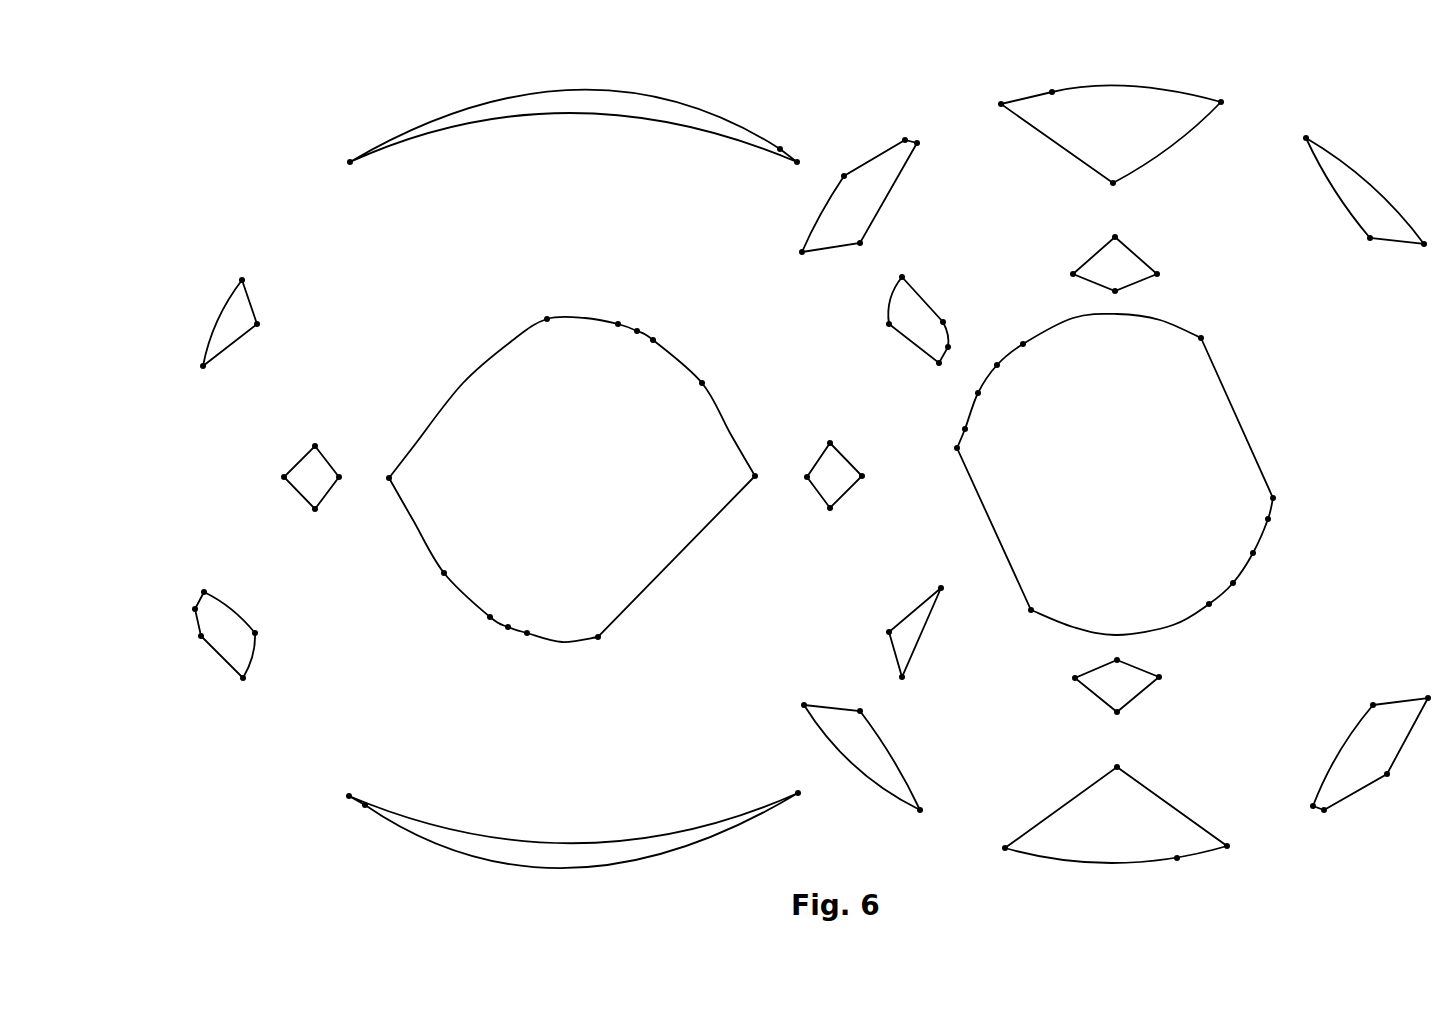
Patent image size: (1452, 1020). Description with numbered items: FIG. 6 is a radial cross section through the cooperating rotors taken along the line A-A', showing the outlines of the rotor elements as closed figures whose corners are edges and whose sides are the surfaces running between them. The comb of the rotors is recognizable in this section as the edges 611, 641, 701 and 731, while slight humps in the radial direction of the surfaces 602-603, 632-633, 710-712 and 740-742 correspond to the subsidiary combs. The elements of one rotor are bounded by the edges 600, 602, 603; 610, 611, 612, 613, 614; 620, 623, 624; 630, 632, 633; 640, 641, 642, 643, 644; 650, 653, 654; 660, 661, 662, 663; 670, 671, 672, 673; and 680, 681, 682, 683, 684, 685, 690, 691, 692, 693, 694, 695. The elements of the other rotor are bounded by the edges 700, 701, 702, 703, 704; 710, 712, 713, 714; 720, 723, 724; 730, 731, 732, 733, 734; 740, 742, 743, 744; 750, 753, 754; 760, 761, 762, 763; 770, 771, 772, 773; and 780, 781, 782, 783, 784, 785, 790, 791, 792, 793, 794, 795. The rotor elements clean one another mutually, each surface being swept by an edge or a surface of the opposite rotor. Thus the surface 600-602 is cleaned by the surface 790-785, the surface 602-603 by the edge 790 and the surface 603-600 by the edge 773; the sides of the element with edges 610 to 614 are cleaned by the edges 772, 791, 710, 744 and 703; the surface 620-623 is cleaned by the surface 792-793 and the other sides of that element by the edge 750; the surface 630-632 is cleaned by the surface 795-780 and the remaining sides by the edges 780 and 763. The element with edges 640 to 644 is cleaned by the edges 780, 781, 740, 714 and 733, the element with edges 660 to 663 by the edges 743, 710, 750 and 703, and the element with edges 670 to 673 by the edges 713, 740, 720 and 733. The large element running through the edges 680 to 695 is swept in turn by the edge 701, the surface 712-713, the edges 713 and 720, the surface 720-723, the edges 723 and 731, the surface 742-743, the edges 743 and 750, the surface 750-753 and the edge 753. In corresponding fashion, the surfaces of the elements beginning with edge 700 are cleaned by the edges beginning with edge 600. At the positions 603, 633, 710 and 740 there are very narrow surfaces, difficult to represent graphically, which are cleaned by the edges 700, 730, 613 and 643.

The edge 600 is at (332, 164).
The edge 602 is at (785, 136).
The edge 603 is at (792, 176).
The edge 700 is at (786, 270).
The edge 701 is at (835, 163).
The polygon vertex 702 is at (897, 125).
The edge 703 is at (925, 155).
The polygon vertex 704 is at (873, 243).
The edge 710 is at (979, 103).
The edge 712 is at (1048, 81).
The edge 713 is at (1231, 91).
The edge 714 is at (1127, 192).
The edge 720 is at (1293, 130).
The edge 723 is at (1425, 260).
The triangle segment vertex 724 is at (1347, 248).
The diamond vertex 760 is at (1049, 274).
The diamond vertex 761 is at (1112, 229).
The diamond vertex 762 is at (1176, 278).
The edge 763 is at (1113, 301).
The edge 610 is at (901, 268).
The edge 611 is at (959, 311).
The edge 612 is at (963, 341).
The edge 613 is at (935, 377).
The edge 614 is at (868, 333).
The edge 780 is at (1208, 330).
The edge 781 is at (1290, 501).
The closed curve vertex 782 is at (1286, 526).
The closed curve vertex 783 is at (1268, 558).
The closed curve vertex 784 is at (1250, 591).
The edge 785 is at (1220, 617).
The edge 790 is at (1009, 620).
The edge 791 is at (937, 452).
The edge 792 is at (983, 428).
The edge 793 is at (997, 399).
The closed curve vertex 794 is at (1015, 370).
The edge 795 is at (1017, 335).
The diamond vertex 770 is at (1175, 681).
The diamond vertex 771 is at (1101, 726).
The edge 772 is at (1052, 681).
The edge 773 is at (1113, 650).
The edge 740 is at (1242, 835).
The edge 742 is at (1175, 875).
The edge 743 is at (987, 862).
The edge 744 is at (1135, 765).
The edge 730 is at (1427, 685).
The edge 731 is at (1397, 790).
The polygon vertex 732 is at (1333, 823).
The edge 733 is at (1294, 794).
The polygon vertex 734 is at (1355, 695).
The edge 660 is at (828, 428).
The edge 661 is at (878, 473).
The edge 662 is at (825, 526).
The edge 663 is at (793, 490).
The edge 620 is at (941, 576).
The edge 623 is at (908, 691).
The edge 624 is at (866, 631).
The edge 750 is at (933, 824).
The edge 753 is at (787, 693).
The curved triangle vertex 754 is at (855, 700).
The edge 630 is at (817, 795).
The edge 632 is at (355, 824).
The edge 633 is at (329, 786).
The edge 680 is at (731, 481).
The edge 681 is at (595, 651).
The edge 682 is at (523, 648).
The edge 683 is at (506, 609).
The edge 684 is at (484, 637).
The edge 685 is at (427, 584).
The edge 690 is at (407, 482).
The edge 691 is at (540, 306).
The edge 692 is at (615, 312).
The edge 693 is at (624, 345).
The edge 694 is at (663, 330).
The edge 695 is at (715, 375).
The triangle vertex 650 is at (198, 381).
The triangle vertex 653 is at (241, 268).
The triangle vertex 654 is at (272, 330).
The edge 670 is at (313, 526).
The edge 671 is at (262, 481).
The edge 672 is at (311, 433).
The edge 673 is at (343, 466).
The edge 640 is at (240, 691).
The edge 641 is at (183, 646).
The edge 642 is at (176, 610).
The edge 643 is at (202, 580).
The edge 644 is at (269, 632).